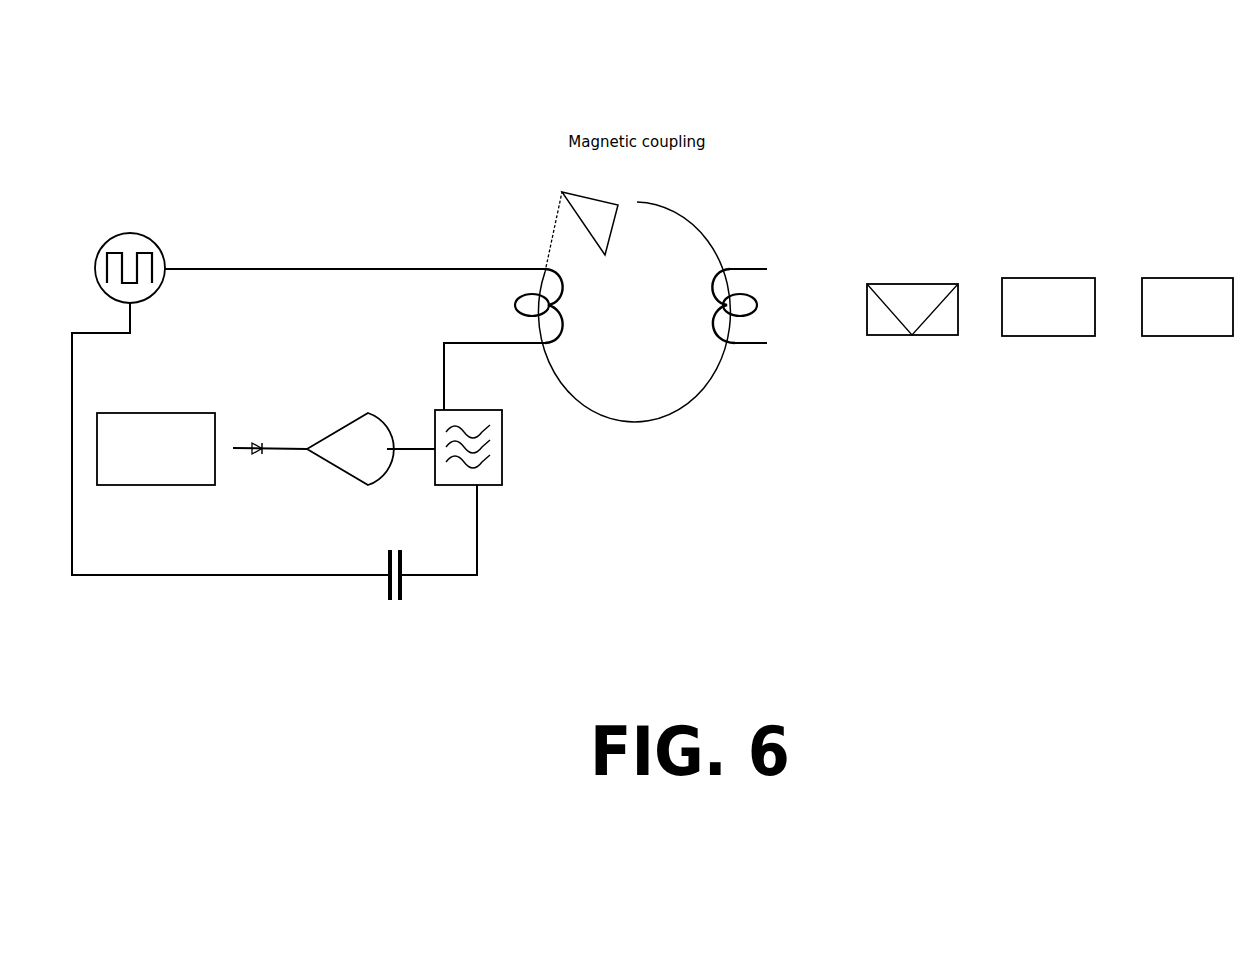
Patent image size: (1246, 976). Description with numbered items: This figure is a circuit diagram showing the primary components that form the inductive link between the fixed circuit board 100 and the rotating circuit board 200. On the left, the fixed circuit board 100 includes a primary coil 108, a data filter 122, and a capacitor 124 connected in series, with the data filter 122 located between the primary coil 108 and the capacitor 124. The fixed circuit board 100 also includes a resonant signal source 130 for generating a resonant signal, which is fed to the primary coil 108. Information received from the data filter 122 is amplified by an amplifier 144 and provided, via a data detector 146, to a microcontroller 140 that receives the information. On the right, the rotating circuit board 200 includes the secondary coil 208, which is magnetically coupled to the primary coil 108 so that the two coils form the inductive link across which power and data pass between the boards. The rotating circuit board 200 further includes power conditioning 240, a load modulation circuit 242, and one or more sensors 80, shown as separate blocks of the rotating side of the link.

The fixed circuit board 100 is at (326, 208).
The resonant signal source 130 is at (158, 252).
The primary coil 108 is at (538, 267).
The microcontroller 140 is at (175, 442).
The data detector 146 is at (257, 457).
The amplifier 144 is at (362, 472).
The data filter 122 is at (495, 452).
The capacitor 124 is at (403, 583).
The rotating circuit board 200 is at (1054, 198).
The secondary coil 208 is at (767, 269).
The load modulation circuit 242 is at (895, 327).
The power conditioning 240 is at (1043, 327).
The sensors 80 is at (1152, 327).